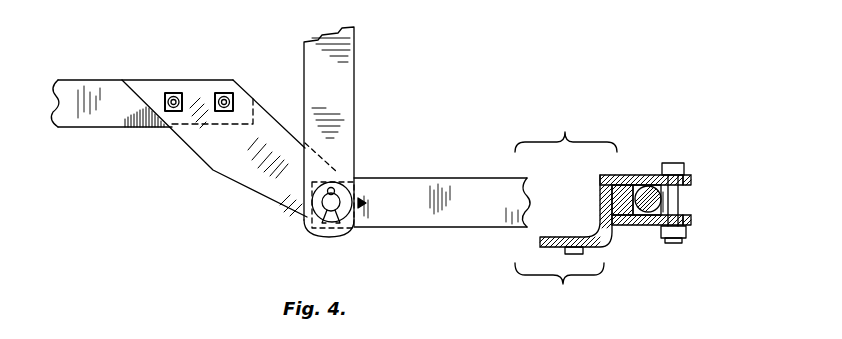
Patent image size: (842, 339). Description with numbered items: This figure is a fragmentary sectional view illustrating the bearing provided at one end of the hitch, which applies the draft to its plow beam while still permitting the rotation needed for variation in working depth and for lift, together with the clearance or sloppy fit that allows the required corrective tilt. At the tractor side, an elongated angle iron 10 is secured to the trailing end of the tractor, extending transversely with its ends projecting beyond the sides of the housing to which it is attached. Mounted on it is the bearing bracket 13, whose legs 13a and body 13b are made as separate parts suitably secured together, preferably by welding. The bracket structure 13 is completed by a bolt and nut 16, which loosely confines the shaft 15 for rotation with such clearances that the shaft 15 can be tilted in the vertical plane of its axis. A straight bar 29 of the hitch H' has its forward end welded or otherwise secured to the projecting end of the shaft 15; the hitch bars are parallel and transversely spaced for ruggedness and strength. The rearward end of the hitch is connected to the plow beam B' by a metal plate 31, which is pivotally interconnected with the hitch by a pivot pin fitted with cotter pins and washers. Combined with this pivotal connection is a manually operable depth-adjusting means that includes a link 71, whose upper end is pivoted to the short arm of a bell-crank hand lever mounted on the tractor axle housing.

The plow beam B' is at (152, 67).
The metal plate 31 is at (250, 177).
The link 71 is at (337, 127).
The bar 29 is at (447, 216).
The angle iron 10 is at (600, 197).
The bearing bracket 13 is at (632, 175).
The legs 13a is at (687, 180).
The body 13b is at (618, 215).
The shaft 15 is at (662, 198).
The bolt and nut 16 is at (683, 162).